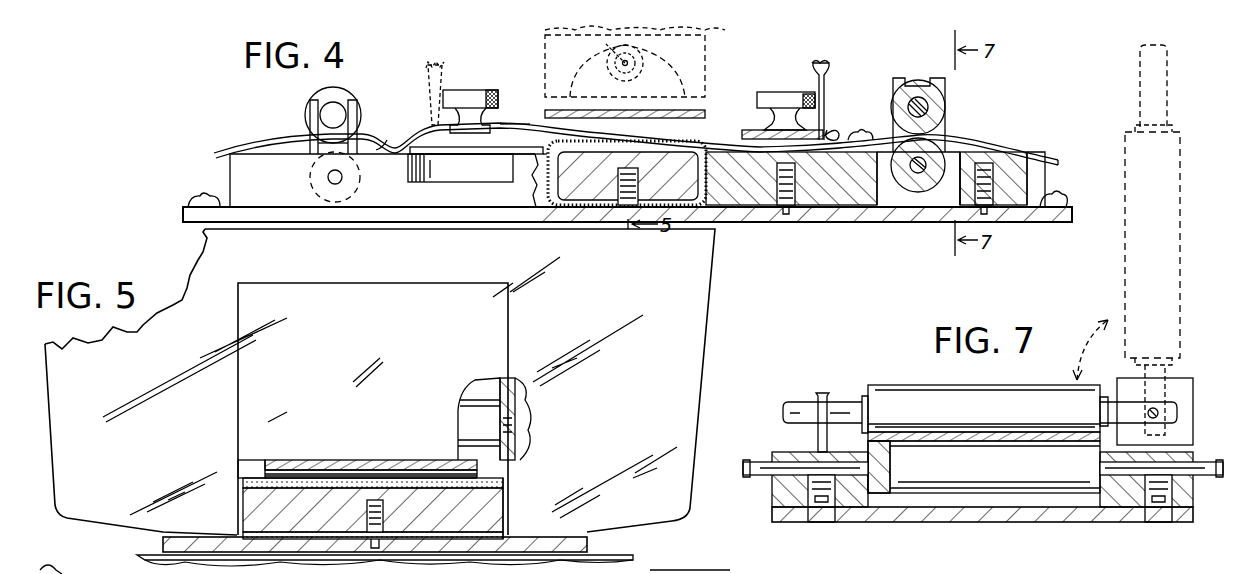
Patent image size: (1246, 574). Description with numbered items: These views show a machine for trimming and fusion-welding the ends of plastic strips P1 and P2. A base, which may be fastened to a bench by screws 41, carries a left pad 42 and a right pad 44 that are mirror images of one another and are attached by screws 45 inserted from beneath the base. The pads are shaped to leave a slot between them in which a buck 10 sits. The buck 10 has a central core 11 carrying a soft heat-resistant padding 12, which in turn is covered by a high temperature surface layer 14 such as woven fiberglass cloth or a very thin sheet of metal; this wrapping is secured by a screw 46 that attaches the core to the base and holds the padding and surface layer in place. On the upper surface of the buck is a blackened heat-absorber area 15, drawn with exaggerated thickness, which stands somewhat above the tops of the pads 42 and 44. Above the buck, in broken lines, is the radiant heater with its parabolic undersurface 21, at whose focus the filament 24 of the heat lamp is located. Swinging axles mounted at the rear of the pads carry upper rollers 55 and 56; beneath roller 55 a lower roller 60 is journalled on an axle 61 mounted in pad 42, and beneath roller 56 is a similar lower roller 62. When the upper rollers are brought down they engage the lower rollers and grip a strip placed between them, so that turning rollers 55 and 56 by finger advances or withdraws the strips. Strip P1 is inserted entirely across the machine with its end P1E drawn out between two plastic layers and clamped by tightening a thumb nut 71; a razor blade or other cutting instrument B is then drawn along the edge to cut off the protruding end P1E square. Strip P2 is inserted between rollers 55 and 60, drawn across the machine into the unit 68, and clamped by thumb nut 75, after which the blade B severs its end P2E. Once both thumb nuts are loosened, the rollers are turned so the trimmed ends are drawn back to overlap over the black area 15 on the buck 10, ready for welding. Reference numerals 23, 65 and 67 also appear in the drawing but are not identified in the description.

In FIG. 4, the buck 10 is at (644, 142).
In FIG. 5, the buck 10 is at (256, 514).
In FIG. 4, the central core 11 is at (560, 172).
In FIG. 4, the soft heat resistance padding 12 is at (530, 160).
In FIG. 4, the high temperature surface layer 14 is at (791, 178).
In FIG. 4, the blackened area 15 is at (628, 176).
In FIG. 5, the blackened area 15 is at (475, 496).
In FIG. 4, the parabolic undersurface 21 is at (575, 72).
In FIG. 5, the parabolic undersurface 21 is at (505, 452).
In FIG. 4, the ink strip 23 is at (708, 114).
In FIG. 5, the ink strip 23 is at (292, 460).
In FIG. 5, the filament 24 is at (462, 432).
In FIG. 4, the screws 41 is at (1056, 196).
In FIG. 4, the left pad 42 is at (230, 164).
In FIG. 4, the right pad 44 is at (1012, 170).
In FIG. 7, the right pad 44 is at (782, 455).
In FIG. 4, the screws 45 is at (788, 215).
In FIG. 4, the screw 46 is at (682, 155).
In FIG. 4, the roller 55 is at (340, 92).
In FIG. 4, the roller 56 is at (936, 108).
In FIG. 7, the roller 56 is at (1035, 395).
In FIG. 4, the roller 60 is at (338, 152).
In FIG. 4, the axle 61 is at (350, 172).
In FIG. 4, the roller 62 is at (932, 162).
In FIG. 7, the roller 62 is at (1045, 472).
In FIG. 4, the roller bracket 65 is at (918, 172).
In FIG. 4, the strip guide 67 is at (516, 124).
In FIG. 4, the unit 68 is at (748, 102).
In FIG. 4, the thumb nut 71 is at (492, 110).
In FIG. 4, the thumb nut 75 is at (795, 98).
In FIG. 4, the cutting blade B is at (430, 104).
In FIG. 4, the plastic strip P1 is at (1024, 148).
In FIG. 5, the plastic strip P1 is at (322, 470).
In FIG. 4, the plastic strip P2 is at (282, 147).
In FIG. 5, the plastic strip P2 is at (358, 476).
In FIG. 4, the end of strip P1 P1E is at (387, 138).
In FIG. 4, the end piece of strip P2 P2E is at (840, 130).